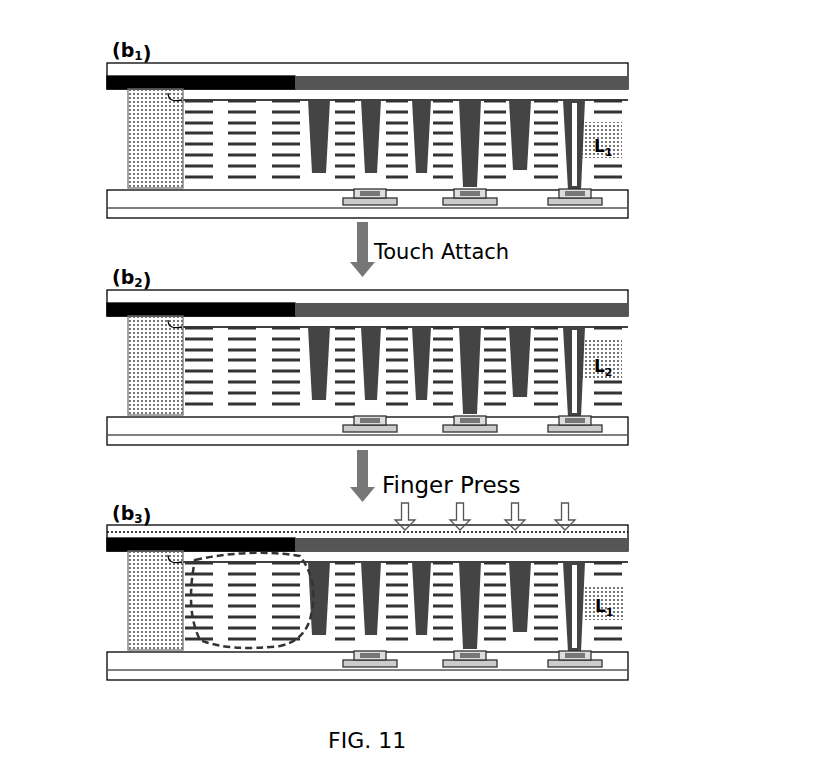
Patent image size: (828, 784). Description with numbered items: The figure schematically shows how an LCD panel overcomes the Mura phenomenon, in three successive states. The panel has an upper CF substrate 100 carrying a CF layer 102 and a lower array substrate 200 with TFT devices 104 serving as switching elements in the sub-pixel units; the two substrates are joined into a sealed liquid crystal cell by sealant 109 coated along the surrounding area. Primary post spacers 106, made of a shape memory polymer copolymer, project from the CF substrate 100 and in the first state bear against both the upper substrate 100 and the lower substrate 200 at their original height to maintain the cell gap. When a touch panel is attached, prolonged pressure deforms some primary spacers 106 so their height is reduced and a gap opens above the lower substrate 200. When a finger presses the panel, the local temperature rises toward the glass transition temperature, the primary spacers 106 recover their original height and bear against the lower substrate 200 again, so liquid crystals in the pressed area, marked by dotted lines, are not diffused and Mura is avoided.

The CF substrate 100 is at (668, 69).
The CF layer 102 is at (613, 80).
The TFT device 104 is at (518, 170).
The primary spacers 106 is at (470, 183).
The sealant 109 is at (140, 110).
The array substrate 200 is at (122, 198).